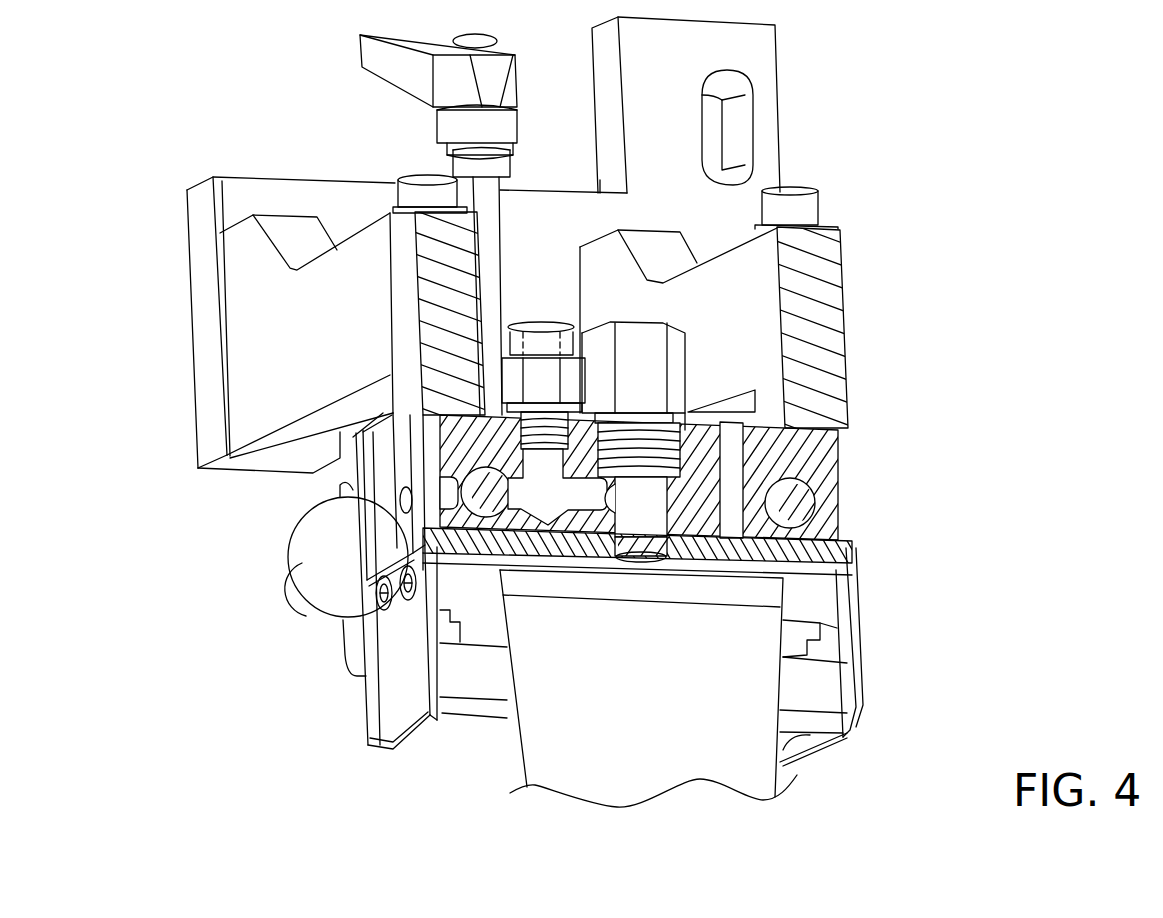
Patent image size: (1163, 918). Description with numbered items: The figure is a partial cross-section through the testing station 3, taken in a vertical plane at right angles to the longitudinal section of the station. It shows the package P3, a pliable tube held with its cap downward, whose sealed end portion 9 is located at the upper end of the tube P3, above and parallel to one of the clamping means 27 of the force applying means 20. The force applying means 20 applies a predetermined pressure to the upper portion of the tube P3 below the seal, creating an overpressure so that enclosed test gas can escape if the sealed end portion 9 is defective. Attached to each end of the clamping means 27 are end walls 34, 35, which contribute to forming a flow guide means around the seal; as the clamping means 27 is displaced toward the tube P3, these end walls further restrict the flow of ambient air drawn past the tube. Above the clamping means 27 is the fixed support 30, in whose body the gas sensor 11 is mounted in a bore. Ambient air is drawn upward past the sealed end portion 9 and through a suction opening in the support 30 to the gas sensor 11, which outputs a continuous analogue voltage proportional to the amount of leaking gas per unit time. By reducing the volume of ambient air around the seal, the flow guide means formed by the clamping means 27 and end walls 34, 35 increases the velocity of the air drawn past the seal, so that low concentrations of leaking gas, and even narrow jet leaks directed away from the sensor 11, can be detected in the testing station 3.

The testing station 3 is at (135, 312).
The gas sensor 11 is at (655, 367).
The support 30 is at (700, 468).
The sealed end portion 9 is at (767, 595).
The end wall 35 is at (857, 640).
The force applying means 20 is at (893, 693).
The end wall 34 is at (393, 657).
The clamping means 27 is at (463, 678).
The package (tube) P3 is at (552, 722).